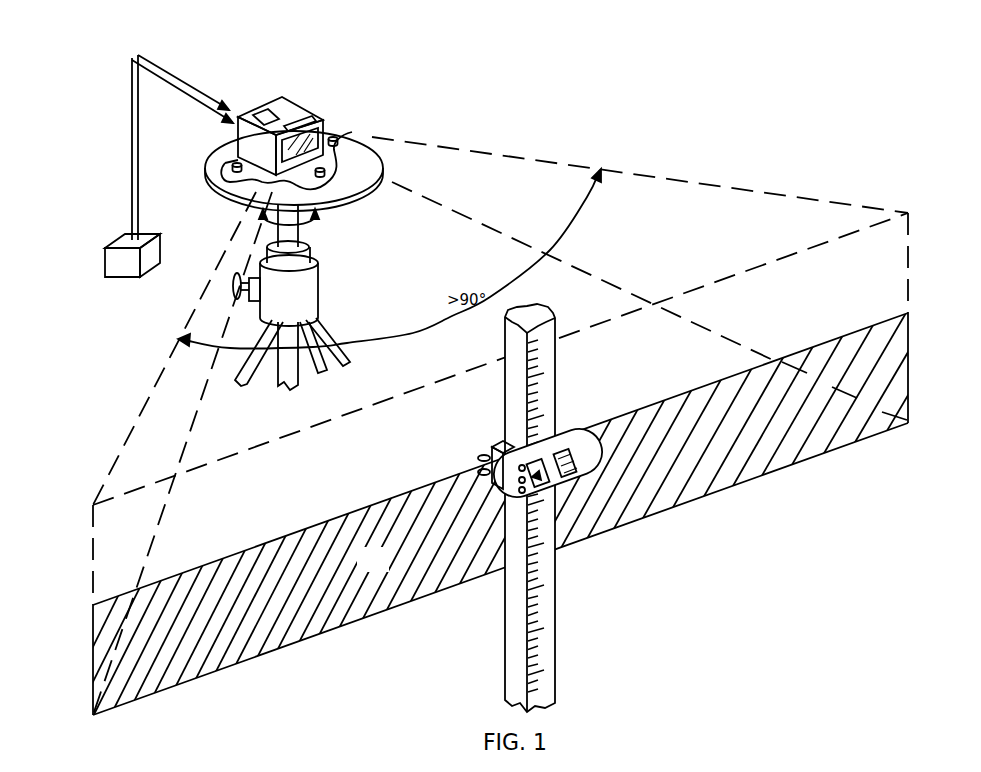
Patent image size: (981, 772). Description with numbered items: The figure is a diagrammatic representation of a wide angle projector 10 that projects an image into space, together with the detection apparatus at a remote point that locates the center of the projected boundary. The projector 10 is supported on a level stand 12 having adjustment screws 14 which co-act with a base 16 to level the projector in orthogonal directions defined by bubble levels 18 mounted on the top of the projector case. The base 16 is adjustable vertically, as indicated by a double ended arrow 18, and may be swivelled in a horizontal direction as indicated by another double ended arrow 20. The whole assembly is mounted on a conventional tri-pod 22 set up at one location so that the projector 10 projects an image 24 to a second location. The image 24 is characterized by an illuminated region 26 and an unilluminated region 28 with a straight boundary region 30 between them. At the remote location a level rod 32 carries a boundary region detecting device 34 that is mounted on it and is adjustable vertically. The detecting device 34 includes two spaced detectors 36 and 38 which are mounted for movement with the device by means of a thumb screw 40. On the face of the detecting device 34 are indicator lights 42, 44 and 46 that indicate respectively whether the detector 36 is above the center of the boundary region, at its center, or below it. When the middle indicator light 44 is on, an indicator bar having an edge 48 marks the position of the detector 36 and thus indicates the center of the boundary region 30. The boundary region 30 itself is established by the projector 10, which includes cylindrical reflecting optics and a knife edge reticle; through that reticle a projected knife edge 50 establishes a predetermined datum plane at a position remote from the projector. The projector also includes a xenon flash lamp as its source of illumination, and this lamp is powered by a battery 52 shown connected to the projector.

The wide angle projector 10 is at (255, 98).
The level stand 12 is at (378, 157).
The adjustment screws 14 is at (233, 163).
The base 16 is at (374, 190).
The bubble levels 18 is at (293, 117).
The double ended arrow 20 is at (315, 228).
The tri-pod 22 is at (320, 287).
The image 24 is at (756, 257).
The illuminated region 26 is at (387, 462).
The unilluminated region 28 is at (387, 569).
The boundary region 30 is at (80, 607).
The level rod 32 is at (557, 576).
The boundary region detecting device 34 is at (592, 430).
The detector 36 is at (479, 470).
The detector 38 is at (480, 456).
The thumb screw 40 is at (566, 448).
The indicator light 42 is at (517, 492).
The indicator light 44 is at (520, 493).
The indicator light 46 is at (523, 496).
The edge of indicator bar 48 is at (545, 478).
The projected knife edge 50 is at (310, 527).
The battery 52 is at (118, 278).